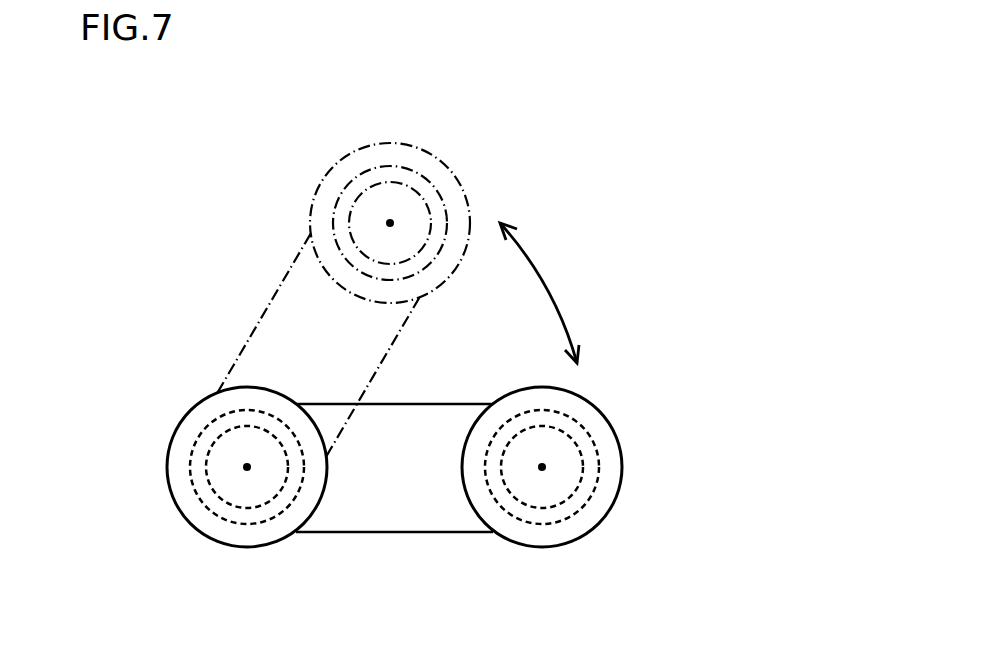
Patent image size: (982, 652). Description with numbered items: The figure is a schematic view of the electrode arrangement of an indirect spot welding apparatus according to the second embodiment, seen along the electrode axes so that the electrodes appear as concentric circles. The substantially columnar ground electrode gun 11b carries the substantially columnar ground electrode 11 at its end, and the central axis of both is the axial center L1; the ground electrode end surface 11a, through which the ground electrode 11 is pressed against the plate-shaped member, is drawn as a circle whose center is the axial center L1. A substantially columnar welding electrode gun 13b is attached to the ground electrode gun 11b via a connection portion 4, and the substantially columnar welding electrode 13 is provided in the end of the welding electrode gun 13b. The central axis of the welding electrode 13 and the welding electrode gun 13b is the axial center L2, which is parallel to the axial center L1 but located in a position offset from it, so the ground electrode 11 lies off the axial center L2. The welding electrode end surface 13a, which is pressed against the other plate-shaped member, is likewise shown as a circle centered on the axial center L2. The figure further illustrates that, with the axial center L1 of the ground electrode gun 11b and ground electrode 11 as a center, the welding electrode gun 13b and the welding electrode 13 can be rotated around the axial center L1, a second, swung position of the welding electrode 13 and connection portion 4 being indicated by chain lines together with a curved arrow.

The connection portion 4 is at (273, 327).
The ground electrode 11 is at (195, 472).
The ground electrode end surface 11a is at (207, 484).
The ground electrode gun 11b is at (190, 410).
The welding electrode 13 is at (477, 341).
The welding electrode end surface 13a is at (580, 485).
The welding electrode gun 13b is at (600, 413).
The axial center L1 is at (247, 467).
The axial center L2 is at (542, 467).